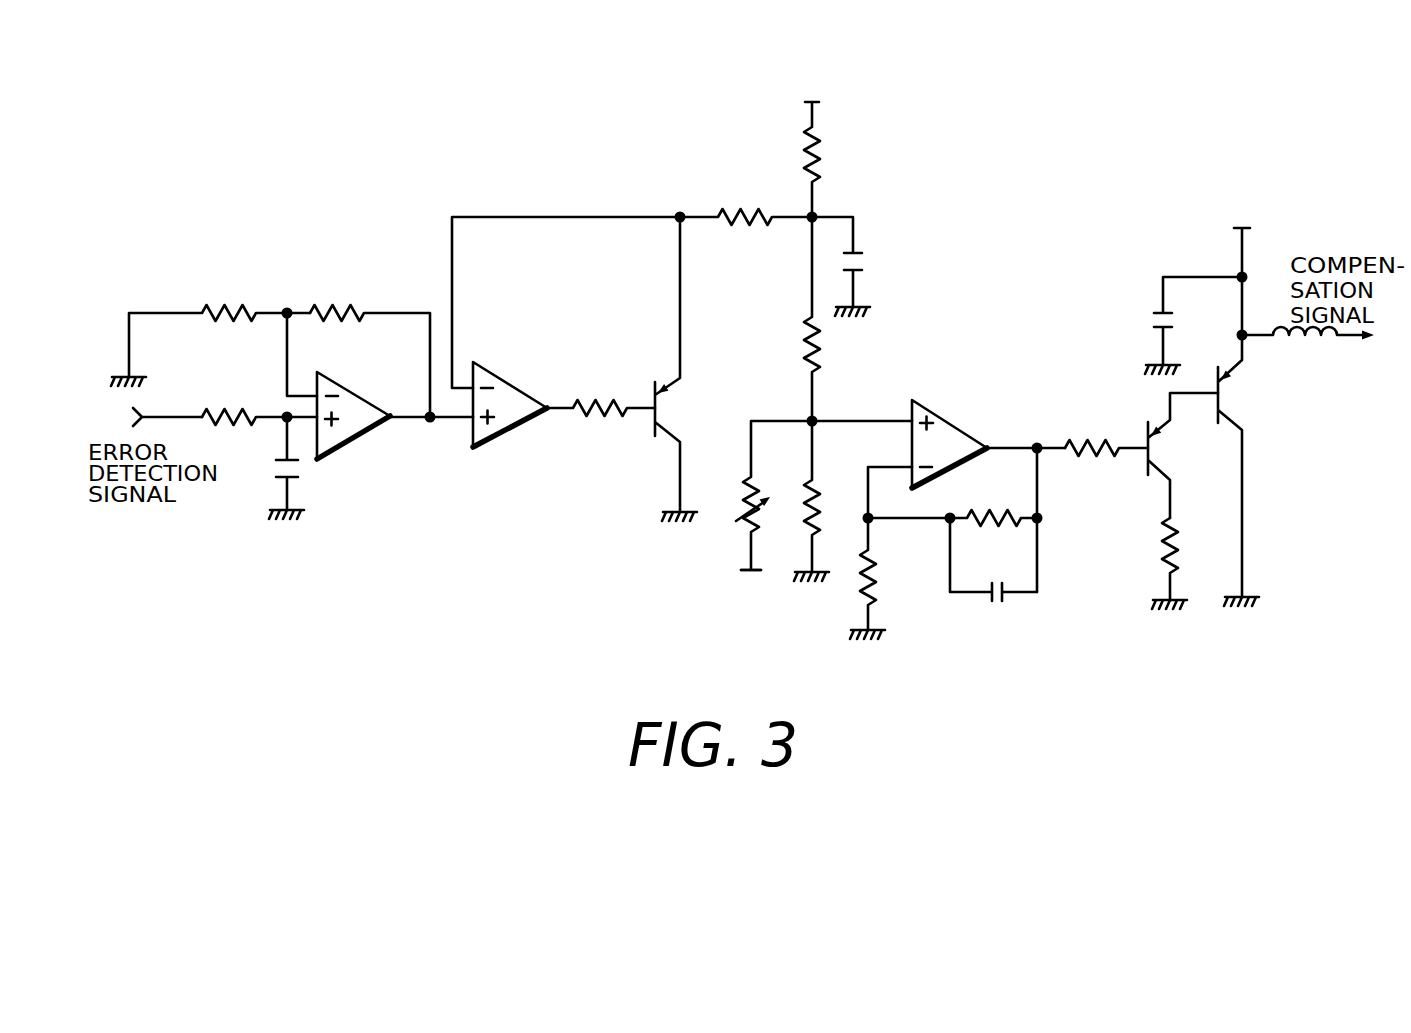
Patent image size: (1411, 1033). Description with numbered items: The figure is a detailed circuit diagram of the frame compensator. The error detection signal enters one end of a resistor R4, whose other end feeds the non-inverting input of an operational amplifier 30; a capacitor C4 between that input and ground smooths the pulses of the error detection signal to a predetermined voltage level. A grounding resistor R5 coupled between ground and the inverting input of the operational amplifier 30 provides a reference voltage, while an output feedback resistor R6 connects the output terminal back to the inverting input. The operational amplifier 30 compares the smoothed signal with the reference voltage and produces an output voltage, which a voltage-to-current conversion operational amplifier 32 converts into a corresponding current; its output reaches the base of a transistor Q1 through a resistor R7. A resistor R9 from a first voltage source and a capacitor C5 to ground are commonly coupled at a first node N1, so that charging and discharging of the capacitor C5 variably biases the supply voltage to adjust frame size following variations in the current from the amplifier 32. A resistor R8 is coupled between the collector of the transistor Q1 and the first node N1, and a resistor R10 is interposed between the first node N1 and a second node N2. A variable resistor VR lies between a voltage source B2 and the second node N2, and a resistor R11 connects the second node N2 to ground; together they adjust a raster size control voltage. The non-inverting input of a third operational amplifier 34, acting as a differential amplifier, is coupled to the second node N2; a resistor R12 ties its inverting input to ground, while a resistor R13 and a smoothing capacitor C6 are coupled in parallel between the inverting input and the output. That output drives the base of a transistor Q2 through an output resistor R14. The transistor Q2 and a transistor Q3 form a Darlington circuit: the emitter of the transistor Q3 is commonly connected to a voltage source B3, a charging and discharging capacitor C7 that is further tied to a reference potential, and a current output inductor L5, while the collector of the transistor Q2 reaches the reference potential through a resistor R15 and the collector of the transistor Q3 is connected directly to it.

The resistor R4 is at (259, 408).
The grounding resistor R5 is at (210, 333).
The output feedback resistor R6 is at (358, 348).
The resistor R7 is at (601, 396).
The resistor R8 is at (746, 204).
The resistor R9 is at (831, 159).
The resistor R10 is at (783, 319).
The resistor R11 is at (829, 501).
The resistor R12 is at (888, 578).
The resistor for differential amplification R13 is at (953, 537).
The output resistor R14 is at (1106, 434).
The resistor R15 is at (1148, 563).
The capacitor C4 is at (300, 468).
The capacitor C5 is at (854, 266).
The smoothing capacitor C6 is at (993, 574).
The charging and discharging capacitor C7 is at (1172, 325).
The transistor Q1 is at (677, 367).
The transistor Q2 is at (1183, 455).
The transistor Q3 is at (1238, 470).
The variable resistor VR is at (757, 495).
The voltage source B2 is at (744, 586).
The voltage source B3 is at (1245, 271).
The current output inductor L5 is at (1308, 352).
The first node N1 is at (815, 214).
The second node N2 is at (815, 418).
The operational amplifier 30 is at (357, 395).
The voltage-to-current conversion operational amplifier 32 is at (508, 384).
The differential amplifier 34 is at (955, 425).